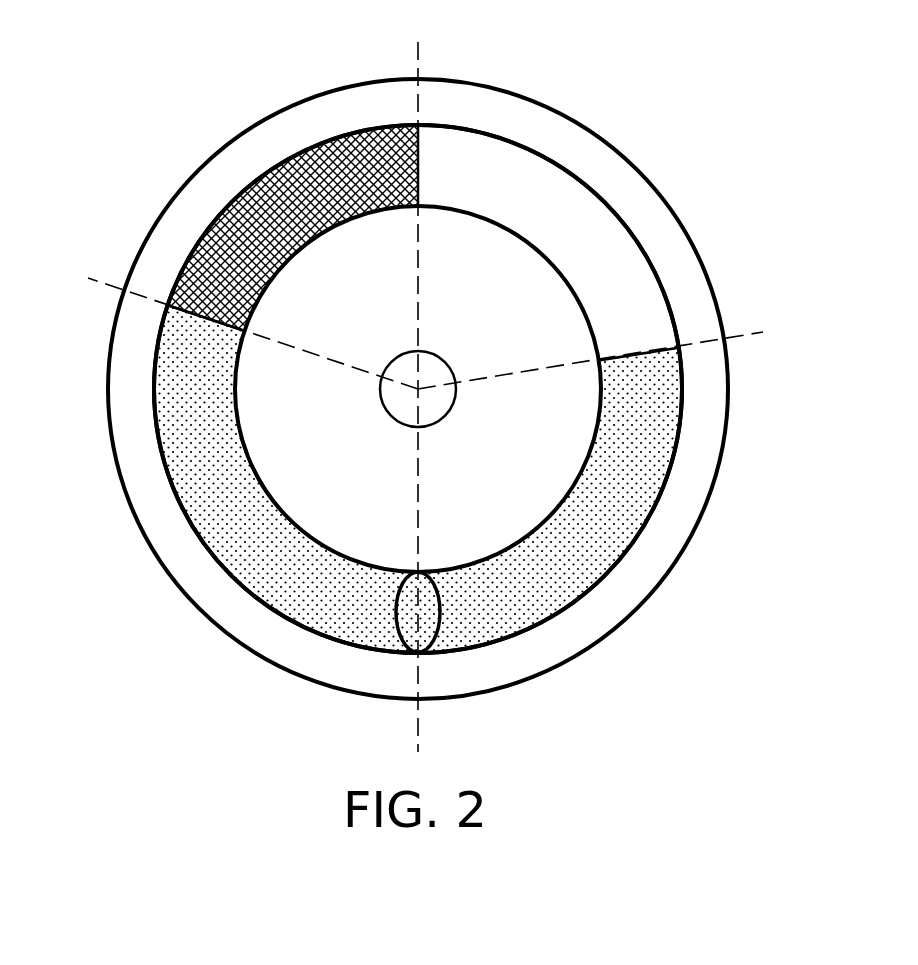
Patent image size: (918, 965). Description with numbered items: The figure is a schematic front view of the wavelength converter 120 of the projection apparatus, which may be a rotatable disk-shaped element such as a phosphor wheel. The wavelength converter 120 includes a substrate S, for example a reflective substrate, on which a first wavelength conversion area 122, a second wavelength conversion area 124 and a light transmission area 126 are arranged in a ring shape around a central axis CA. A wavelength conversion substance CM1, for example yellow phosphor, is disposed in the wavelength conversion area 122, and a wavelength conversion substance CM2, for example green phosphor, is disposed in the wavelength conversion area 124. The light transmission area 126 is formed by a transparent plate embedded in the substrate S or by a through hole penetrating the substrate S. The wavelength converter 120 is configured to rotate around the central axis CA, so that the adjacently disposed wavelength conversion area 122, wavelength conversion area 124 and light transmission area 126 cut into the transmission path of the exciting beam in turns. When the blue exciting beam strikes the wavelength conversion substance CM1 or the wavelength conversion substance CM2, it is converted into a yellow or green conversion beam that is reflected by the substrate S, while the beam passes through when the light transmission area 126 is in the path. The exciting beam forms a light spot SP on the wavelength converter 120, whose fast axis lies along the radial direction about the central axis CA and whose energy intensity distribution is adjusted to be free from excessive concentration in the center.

The wavelength converter 120 is at (660, 140).
The wavelength conversion area 122 is at (449, 523).
The wavelength conversion area 124 is at (244, 178).
The light transmission area 126 is at (640, 240).
The wavelength conversion substance CM1 is at (522, 597).
The wavelength conversion substance CM2 is at (320, 173).
The substrate S is at (240, 167).
The central axis CA is at (413, 405).
The light spot SP is at (393, 618).